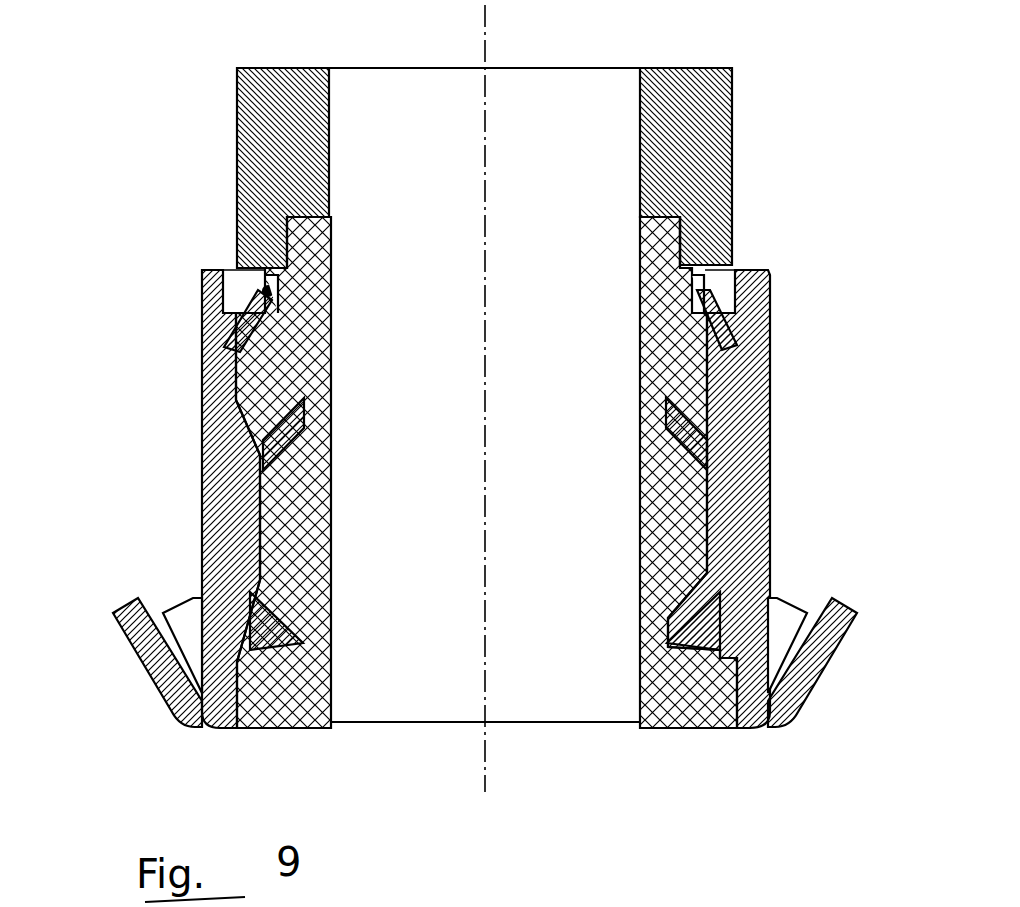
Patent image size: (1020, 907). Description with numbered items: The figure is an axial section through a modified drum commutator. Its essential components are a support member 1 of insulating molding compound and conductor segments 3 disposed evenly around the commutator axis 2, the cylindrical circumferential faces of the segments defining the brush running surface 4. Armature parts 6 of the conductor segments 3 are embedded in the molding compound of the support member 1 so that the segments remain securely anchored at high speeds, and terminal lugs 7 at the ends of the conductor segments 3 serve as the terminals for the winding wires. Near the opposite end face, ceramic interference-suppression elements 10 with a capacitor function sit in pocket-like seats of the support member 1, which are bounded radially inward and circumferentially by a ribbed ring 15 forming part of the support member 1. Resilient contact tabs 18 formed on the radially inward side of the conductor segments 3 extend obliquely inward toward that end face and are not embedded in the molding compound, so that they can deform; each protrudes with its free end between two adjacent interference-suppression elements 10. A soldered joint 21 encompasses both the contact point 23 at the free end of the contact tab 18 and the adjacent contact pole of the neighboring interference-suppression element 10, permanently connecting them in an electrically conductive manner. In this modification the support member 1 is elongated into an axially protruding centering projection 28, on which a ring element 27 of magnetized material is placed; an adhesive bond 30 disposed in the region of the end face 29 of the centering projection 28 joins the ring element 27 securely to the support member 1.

The support member 1 is at (698, 700).
The commutator axis 2 is at (487, 768).
The conductor segments 3 is at (770, 462).
The brush running surface 4 is at (197, 508).
The armature parts 6 is at (285, 430).
The terminal lugs 7 is at (837, 653).
The interference-suppression elements 10 is at (710, 280).
The ribbed ring 15 is at (735, 253).
The resilient contact tabs 18 is at (225, 303).
The soldered joint 21 is at (266, 290).
The contact point 23 is at (733, 297).
The ring element 27 is at (700, 137).
The centering projection 28 is at (660, 242).
The end face 29 is at (237, 242).
The adhesive bond 30 is at (255, 162).